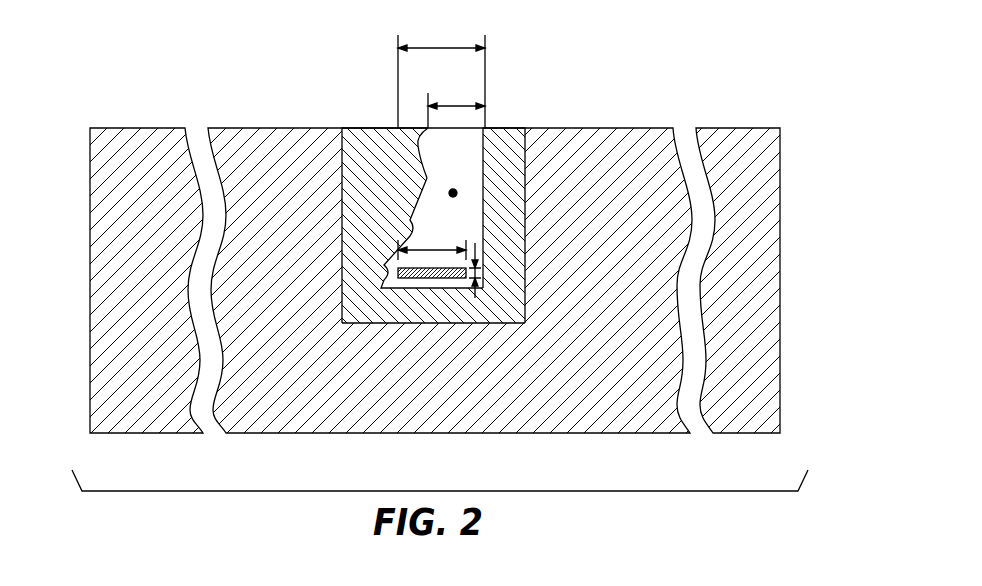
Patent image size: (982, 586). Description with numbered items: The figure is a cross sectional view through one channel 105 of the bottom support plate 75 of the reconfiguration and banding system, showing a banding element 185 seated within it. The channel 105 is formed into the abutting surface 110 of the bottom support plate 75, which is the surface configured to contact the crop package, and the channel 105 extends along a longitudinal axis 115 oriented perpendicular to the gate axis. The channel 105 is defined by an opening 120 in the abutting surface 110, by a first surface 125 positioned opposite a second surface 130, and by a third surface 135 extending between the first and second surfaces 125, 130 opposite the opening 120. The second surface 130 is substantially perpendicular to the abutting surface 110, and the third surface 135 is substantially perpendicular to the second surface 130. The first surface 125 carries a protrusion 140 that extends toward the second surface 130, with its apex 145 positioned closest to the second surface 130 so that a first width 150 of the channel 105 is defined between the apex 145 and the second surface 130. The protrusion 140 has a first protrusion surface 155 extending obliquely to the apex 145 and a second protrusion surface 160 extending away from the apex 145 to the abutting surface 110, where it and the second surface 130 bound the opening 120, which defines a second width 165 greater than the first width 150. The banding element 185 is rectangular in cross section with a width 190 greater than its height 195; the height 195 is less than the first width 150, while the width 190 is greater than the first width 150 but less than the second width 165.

The bottom support plate 75 is at (740, 160).
The channel 105 is at (460, 305).
The abutting surface 110 is at (596, 128).
The longitudinal axis 115 is at (456, 190).
The opening 120 is at (503, 90).
The first surface 125 is at (390, 289).
The second surface 130 is at (484, 232).
The third surface 135 is at (442, 288).
The protrusion 140 is at (377, 212).
The apex 145 is at (427, 180).
The first width 150 is at (458, 104).
The first protrusion surface 155 is at (384, 270).
The second protrusion surface 160 is at (412, 137).
The second width 165 is at (433, 46).
The banding element 185 is at (411, 279).
The width 190 is at (442, 244).
The height 195 is at (480, 258).